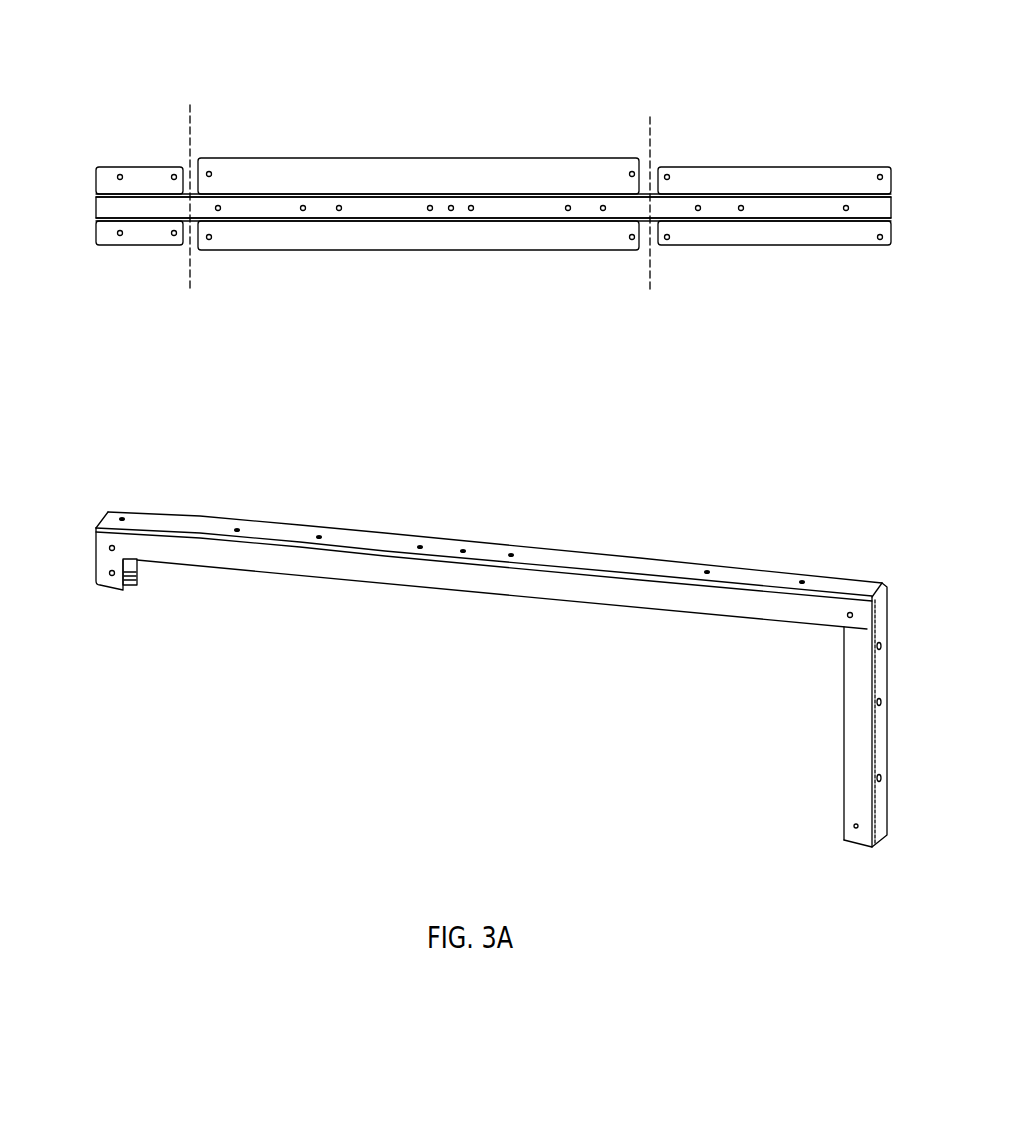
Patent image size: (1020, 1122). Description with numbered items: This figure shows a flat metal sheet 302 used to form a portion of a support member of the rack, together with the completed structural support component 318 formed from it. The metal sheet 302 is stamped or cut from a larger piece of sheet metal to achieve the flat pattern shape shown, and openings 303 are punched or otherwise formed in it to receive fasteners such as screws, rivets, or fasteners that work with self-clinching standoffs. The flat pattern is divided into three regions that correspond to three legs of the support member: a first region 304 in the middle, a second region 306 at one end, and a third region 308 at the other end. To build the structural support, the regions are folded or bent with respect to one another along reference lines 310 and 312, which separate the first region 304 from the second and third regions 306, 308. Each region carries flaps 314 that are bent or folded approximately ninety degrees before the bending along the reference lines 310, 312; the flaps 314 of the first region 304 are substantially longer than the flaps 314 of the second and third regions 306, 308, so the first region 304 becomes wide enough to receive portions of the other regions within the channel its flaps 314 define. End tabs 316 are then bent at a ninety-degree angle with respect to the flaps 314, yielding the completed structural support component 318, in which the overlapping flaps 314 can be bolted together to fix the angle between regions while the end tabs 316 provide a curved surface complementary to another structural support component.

The flat metal sheet 302 is at (268, 66).
The openings 303 is at (603, 206).
The first region 304 is at (432, 150).
The second region 306 is at (160, 152).
The third region 308 is at (770, 157).
The reference line 310 is at (209, 197).
The reference line 312 is at (672, 199).
The flaps 314 is at (158, 189).
The end tabs 316 is at (97, 247).
The completed structural support component 318 is at (172, 487).